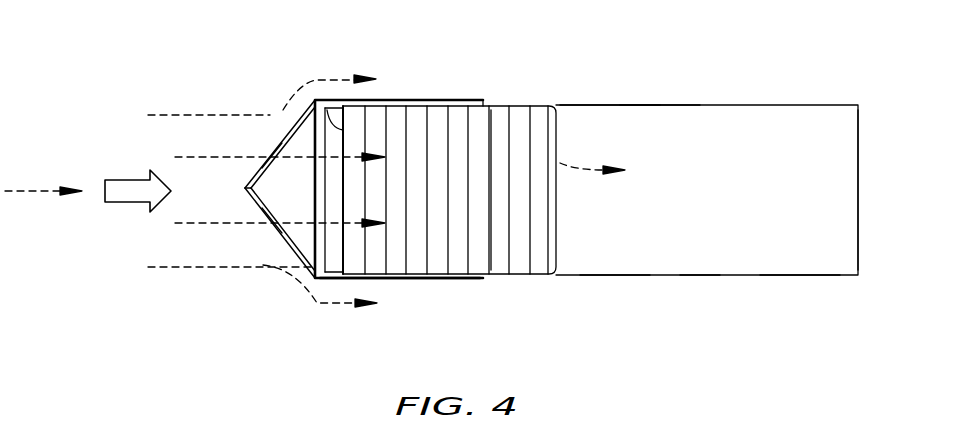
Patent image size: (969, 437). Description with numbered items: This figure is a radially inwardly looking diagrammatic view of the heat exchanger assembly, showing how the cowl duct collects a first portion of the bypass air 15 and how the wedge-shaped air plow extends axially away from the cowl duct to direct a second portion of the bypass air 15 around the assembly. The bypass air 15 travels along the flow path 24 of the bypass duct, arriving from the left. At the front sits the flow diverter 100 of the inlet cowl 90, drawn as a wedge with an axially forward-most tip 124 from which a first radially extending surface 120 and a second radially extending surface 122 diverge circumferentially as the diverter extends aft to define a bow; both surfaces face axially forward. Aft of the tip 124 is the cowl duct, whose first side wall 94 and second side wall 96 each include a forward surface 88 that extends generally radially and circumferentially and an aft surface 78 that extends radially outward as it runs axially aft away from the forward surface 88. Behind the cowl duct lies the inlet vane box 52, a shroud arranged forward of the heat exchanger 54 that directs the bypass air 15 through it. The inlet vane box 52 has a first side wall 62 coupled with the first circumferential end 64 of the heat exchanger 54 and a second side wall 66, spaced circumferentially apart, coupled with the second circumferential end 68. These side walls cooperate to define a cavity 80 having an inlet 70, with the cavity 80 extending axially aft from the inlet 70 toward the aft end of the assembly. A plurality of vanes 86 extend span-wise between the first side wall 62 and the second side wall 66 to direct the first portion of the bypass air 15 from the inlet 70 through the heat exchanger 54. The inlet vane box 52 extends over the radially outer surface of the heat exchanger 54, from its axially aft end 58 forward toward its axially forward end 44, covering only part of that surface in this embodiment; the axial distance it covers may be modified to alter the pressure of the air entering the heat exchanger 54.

The bypass air 15 is at (17, 193).
The flow path 24 is at (130, 203).
The axially forward end of the heat exchanger 44 is at (325, 108).
The inlet vane box 52 is at (795, 277).
The heat exchanger 54 is at (703, 185).
The axially aft end of the heat exchanger 58 is at (860, 197).
The first side wall 62 is at (618, 277).
The first circumferential end of the heat exchanger 64 is at (688, 274).
The second side wall 66 is at (577, 105).
The second circumferential end of the heat exchanger 68 is at (643, 110).
The inlet 70 is at (497, 239).
The aft surface 78 is at (483, 103).
The cavity 80 is at (548, 163).
The vanes 86 is at (453, 248).
The forward surface 88 is at (322, 257).
The inlet cowl 90 is at (397, 102).
The first side wall of the cowl duct 94 is at (382, 282).
The second side wall of the cowl duct 96 is at (443, 102).
The flow diverter 100 is at (293, 123).
The first radially extending surface 120 is at (277, 225).
The second radially extending surface 122 is at (267, 160).
The axially forward-most tip 124 is at (245, 192).